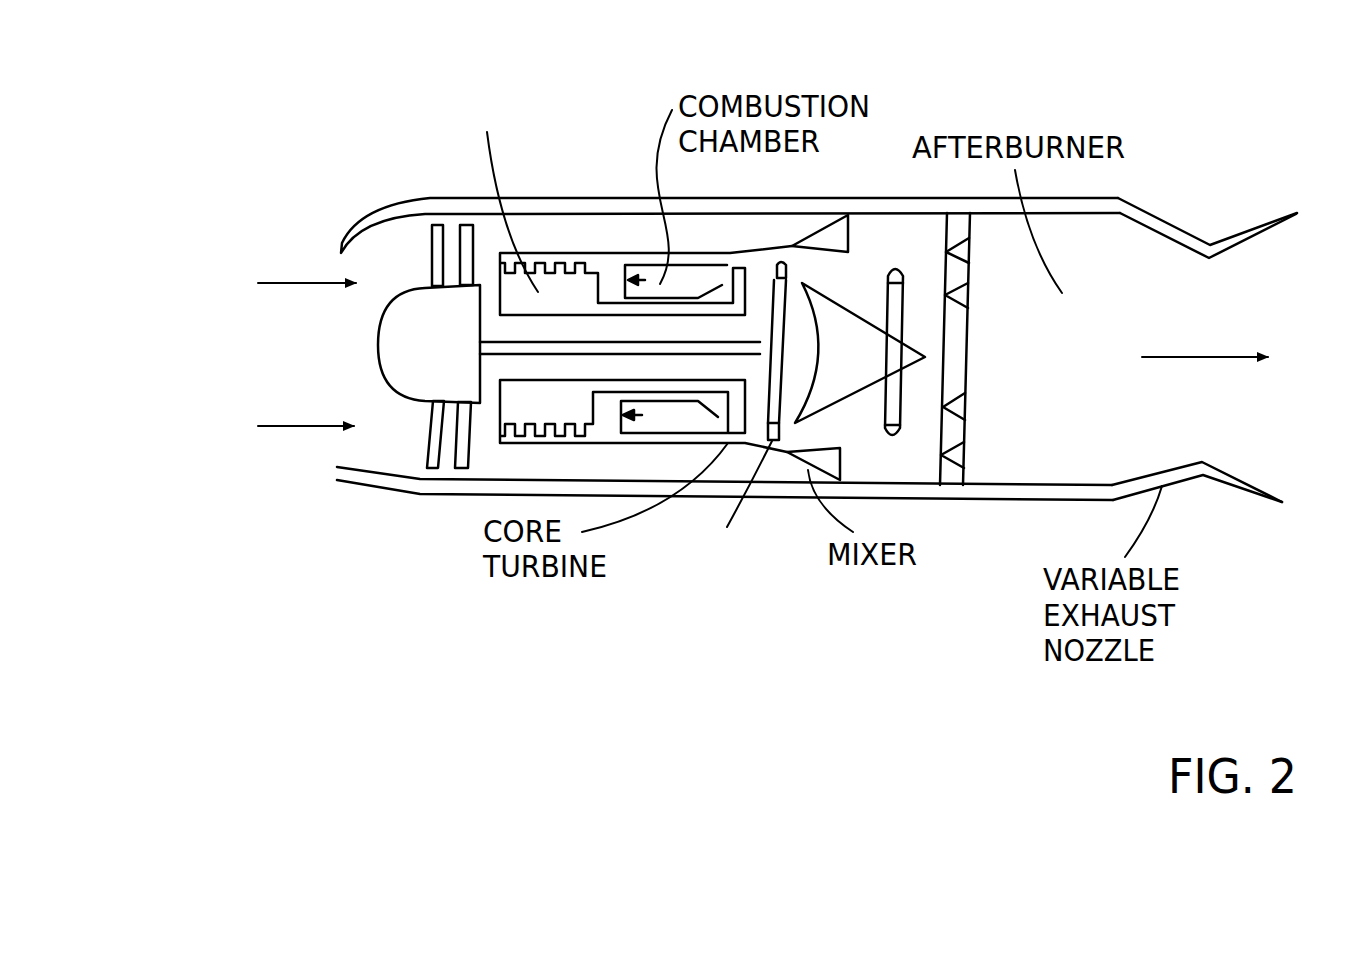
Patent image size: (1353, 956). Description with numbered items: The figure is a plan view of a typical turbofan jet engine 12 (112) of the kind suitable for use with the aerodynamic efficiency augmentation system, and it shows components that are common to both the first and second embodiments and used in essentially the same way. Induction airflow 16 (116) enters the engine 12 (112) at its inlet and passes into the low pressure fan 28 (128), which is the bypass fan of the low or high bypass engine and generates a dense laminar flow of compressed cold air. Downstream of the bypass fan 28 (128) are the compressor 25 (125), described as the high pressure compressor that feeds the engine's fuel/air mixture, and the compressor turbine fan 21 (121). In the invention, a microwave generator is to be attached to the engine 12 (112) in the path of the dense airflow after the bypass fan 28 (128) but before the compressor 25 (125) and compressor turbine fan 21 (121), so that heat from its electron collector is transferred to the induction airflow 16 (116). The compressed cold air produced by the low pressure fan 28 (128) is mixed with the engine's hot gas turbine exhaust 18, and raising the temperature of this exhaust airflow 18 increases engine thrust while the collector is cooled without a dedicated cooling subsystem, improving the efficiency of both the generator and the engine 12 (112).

The jet engine 12 is at (801, 291).
The jet engine 112 is at (1125, 189).
The induction airflow 16 is at (317, 434).
The induction airflow 116 is at (302, 438).
The exhaust airflow 18 is at (1248, 310).
The compressor turbine fan 21 is at (834, 325).
The compressor turbine fan 121 is at (790, 270).
The compressor 25 is at (569, 233).
The compressor 125 is at (567, 255).
The low pressure fan 28 is at (332, 293).
The low pressure fan 128 is at (430, 242).